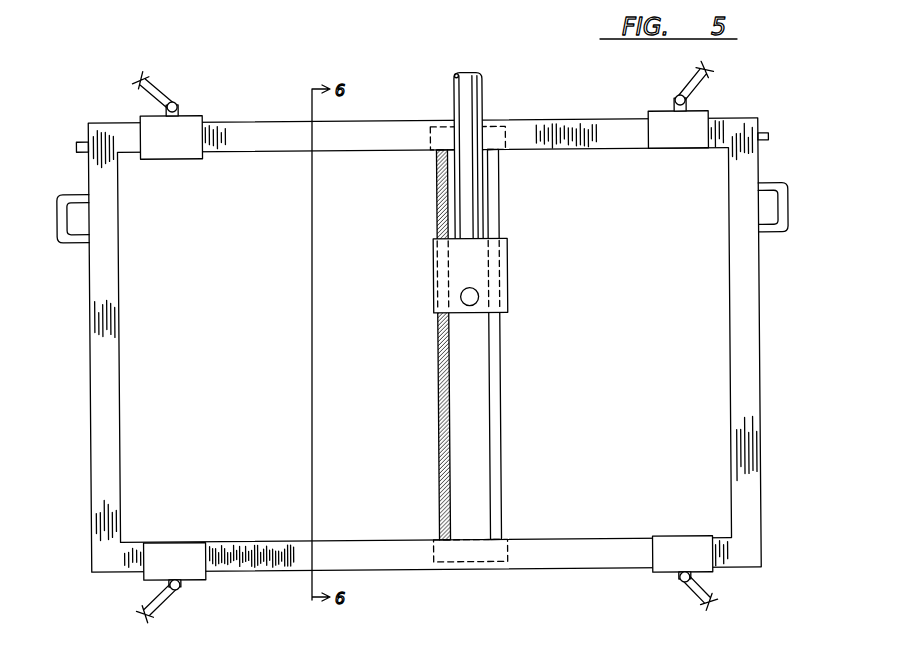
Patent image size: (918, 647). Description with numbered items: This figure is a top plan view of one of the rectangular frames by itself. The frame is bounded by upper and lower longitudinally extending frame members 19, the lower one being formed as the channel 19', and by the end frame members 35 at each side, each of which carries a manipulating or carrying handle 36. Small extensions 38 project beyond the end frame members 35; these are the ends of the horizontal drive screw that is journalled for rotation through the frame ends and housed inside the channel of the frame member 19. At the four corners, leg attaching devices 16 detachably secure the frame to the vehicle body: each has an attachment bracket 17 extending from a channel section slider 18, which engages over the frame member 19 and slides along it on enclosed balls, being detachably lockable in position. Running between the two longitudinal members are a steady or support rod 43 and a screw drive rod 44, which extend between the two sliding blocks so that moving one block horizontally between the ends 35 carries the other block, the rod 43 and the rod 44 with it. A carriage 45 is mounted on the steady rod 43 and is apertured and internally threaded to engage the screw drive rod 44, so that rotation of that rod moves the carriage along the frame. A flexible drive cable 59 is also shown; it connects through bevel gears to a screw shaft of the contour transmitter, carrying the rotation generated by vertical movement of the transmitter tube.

The leg attaching device 16 is at (183, 99).
The attachment bracket 17 is at (686, 84).
The channel section slider 18 is at (676, 148).
The longitudinal frame member 19 is at (205, 150).
The channel 19' is at (203, 570).
The end frame member 35 is at (90, 320).
The carrying handle 36 is at (58, 216).
The extension 38 is at (78, 144).
The steady or support rod 43 is at (500, 442).
The screw drive rod 44 is at (438, 428).
The carriage 45 is at (434, 290).
The flexible drive cable 59 is at (463, 97).